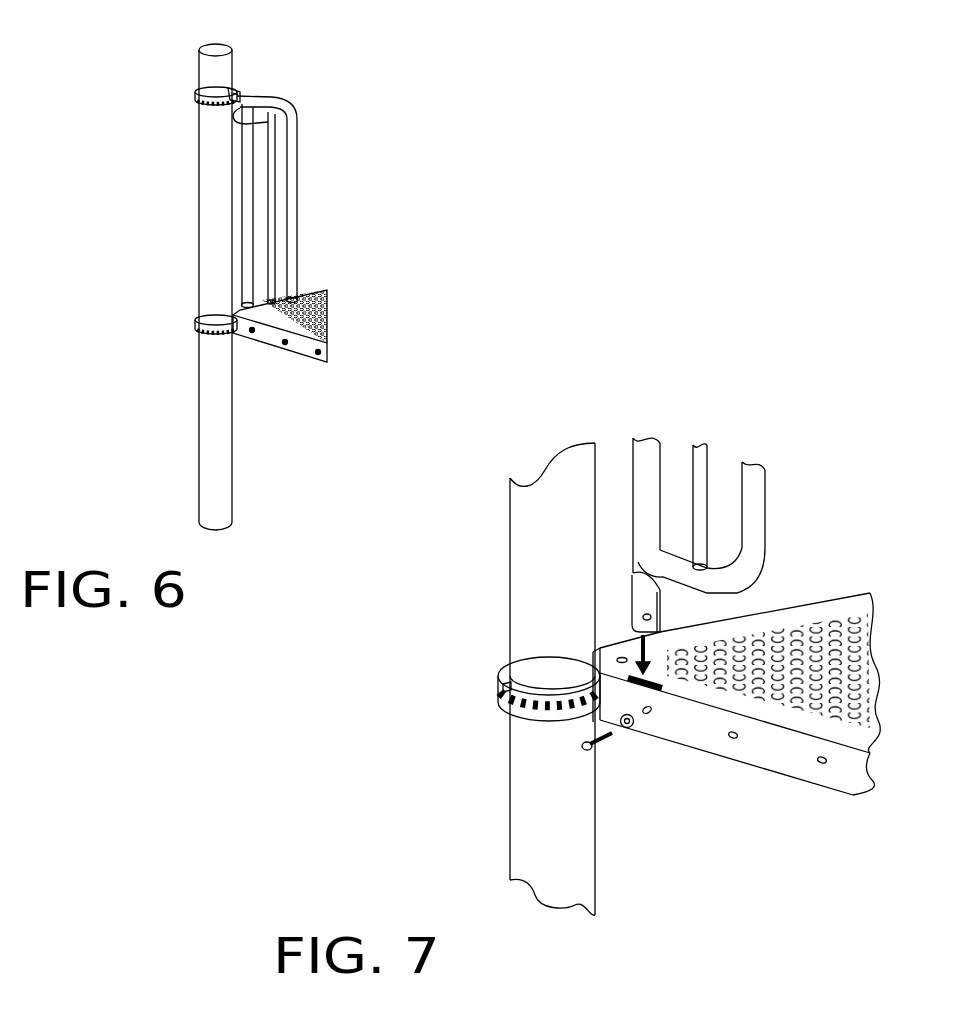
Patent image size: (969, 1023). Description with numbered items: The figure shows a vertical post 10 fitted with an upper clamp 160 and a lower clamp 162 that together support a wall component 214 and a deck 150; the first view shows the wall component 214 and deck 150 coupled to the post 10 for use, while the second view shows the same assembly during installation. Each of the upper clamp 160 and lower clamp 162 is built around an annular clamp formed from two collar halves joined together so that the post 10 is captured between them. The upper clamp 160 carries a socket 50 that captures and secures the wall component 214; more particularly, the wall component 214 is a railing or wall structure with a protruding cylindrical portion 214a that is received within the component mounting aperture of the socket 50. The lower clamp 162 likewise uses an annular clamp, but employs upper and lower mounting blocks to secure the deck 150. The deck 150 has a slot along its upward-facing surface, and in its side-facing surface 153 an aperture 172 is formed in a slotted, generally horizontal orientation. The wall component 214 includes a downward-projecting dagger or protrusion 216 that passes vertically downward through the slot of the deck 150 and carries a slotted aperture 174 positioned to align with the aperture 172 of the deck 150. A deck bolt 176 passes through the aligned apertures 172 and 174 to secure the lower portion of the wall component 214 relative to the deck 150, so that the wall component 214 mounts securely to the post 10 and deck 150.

In FIG. 6, the vertical post 10 is at (217, 73).
In FIG. 7, the vertical post 10 is at (558, 548).
In FIG. 6, the socket 50 is at (230, 93).
In FIG. 6, the deck 150 is at (273, 343).
In FIG. 7, the deck 150 is at (731, 706).
In FIG. 7, the side-facing surface 153 is at (717, 740).
In FIG. 6, the upper clamp 160 is at (200, 118).
In FIG. 6, the lower clamp 162 is at (166, 355).
In FIG. 7, the aperture 172 is at (650, 712).
In FIG. 7, the slotted aperture 174 is at (643, 632).
In FIG. 7, the deck bolt 176 is at (613, 748).
In FIG. 6, the wall component 214 is at (326, 202).
In FIG. 7, the wall component 214 is at (753, 510).
In FIG. 6, the protruding cylindrical portion 214a is at (237, 120).
In FIG. 7, the downward-projecting protrusion 216 is at (643, 603).